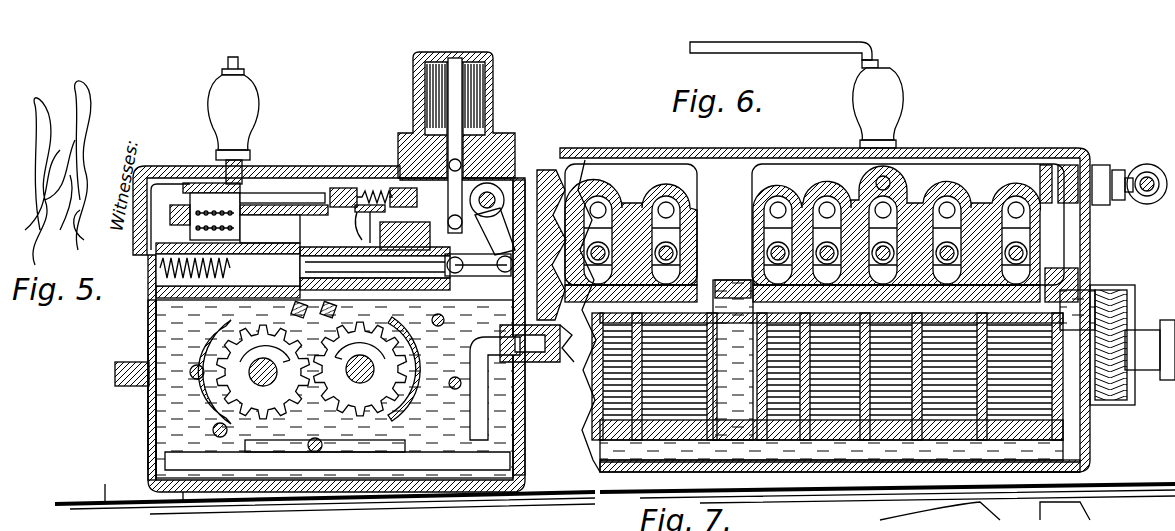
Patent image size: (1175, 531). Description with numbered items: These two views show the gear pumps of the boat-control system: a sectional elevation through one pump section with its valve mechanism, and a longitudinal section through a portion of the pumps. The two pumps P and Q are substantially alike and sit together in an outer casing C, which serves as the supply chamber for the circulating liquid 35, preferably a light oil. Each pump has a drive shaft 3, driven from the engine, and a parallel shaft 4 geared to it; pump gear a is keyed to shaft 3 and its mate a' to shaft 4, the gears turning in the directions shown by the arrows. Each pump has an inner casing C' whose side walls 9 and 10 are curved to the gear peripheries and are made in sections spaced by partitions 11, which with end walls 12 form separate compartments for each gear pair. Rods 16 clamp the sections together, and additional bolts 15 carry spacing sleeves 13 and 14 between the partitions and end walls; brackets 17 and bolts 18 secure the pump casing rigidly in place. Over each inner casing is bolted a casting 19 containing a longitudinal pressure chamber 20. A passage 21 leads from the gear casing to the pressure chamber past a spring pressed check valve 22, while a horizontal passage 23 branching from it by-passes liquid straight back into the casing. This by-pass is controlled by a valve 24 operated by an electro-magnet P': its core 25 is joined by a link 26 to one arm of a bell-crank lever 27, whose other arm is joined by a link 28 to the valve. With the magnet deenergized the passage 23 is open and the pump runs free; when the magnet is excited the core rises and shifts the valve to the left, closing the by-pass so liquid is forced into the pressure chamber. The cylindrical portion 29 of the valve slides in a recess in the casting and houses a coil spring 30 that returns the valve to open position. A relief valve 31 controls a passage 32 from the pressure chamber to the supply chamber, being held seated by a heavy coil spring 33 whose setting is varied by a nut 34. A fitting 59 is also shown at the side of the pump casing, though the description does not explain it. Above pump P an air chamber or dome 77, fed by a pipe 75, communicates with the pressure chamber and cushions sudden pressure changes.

In FIG. 5, the drive shaft 3 is at (250, 375).
In FIG. 5, the shaft 4 is at (350, 375).
In FIG. 5, the pump gear a is at (261, 385).
In FIG. 5, the pump gear a' is at (360, 382).
In FIG. 5, the side wall 9 is at (148, 393).
In FIG. 5, the side wall 10 is at (500, 410).
In FIG. 6, the partition 11 is at (820, 425).
In FIG. 6, the end wall 12 is at (738, 425).
In FIG. 5, the spacing sleeve 13 is at (318, 452).
In FIG. 6, the spacing sleeve 13 is at (1030, 430).
In FIG. 5, the spacing sleeve 14 is at (249, 340).
In FIG. 6, the spacing sleeve 14 is at (1058, 268).
In FIG. 5, the clamping rod or bolt 15 is at (337, 388).
In FIG. 6, the clamping rod or bolt 15 is at (755, 280).
In FIG. 5, the rod 16 is at (148, 318).
In FIG. 5, the bracket 17 is at (195, 430).
In FIG. 6, the bracket 17 is at (790, 450).
In FIG. 5, the bolt 18 is at (148, 475).
In FIG. 5, the casting 19 is at (156, 250).
In FIG. 5, the pressure chamber 20 is at (200, 172).
In FIG. 6, the pressure chamber 20 is at (635, 190).
In FIG. 5, the passage 21 is at (295, 195).
In FIG. 6, the passage 21 is at (782, 218).
In FIG. 5, the spring pressed check valve 22 is at (240, 190).
In FIG. 5, the horizontal passage 23 is at (375, 227).
In FIG. 5, the valve 24 is at (455, 290).
In FIG. 6, the valve 24 is at (752, 240).
In FIG. 5, the core 25 is at (490, 118).
In FIG. 5, the link 26 is at (498, 152).
In FIG. 5, the bell-crank lever 27 is at (500, 228).
In FIG. 5, the link 28 is at (475, 262).
In FIG. 5, the cylindrical portion 29 is at (290, 218).
In FIG. 5, the coil spring 30 is at (226, 268).
In FIG. 5, the relief valve 31 is at (345, 187).
In FIG. 5, the passage 32 is at (285, 205).
In FIG. 6, the passage 32 is at (890, 183).
In FIG. 5, the heavy coil spring 33 is at (378, 186).
In FIG. 5, the nut 34 is at (369, 224).
In FIG. 5, the circulating liquid 35 is at (520, 262).
In FIG. 6, the circulating liquid 35 is at (1095, 275).
In FIG. 5, the pipe fitting 59 is at (570, 360).
In FIG. 6, the pipe 75 is at (808, 50).
In FIG. 5, the air chamber or dome 77 is at (222, 103).
In FIG. 6, the air chamber or dome 77 is at (892, 100).
In FIG. 5, the casing C is at (115, 400).
In FIG. 6, the casing C is at (1129, 210).
In FIG. 5, the inner casing C' is at (107, 361).
In FIG. 6, the pump P is at (825, 290).
In FIG. 5, the electro-magnet P' is at (476, 115).
In FIG. 5, the pump Q is at (567, 223).